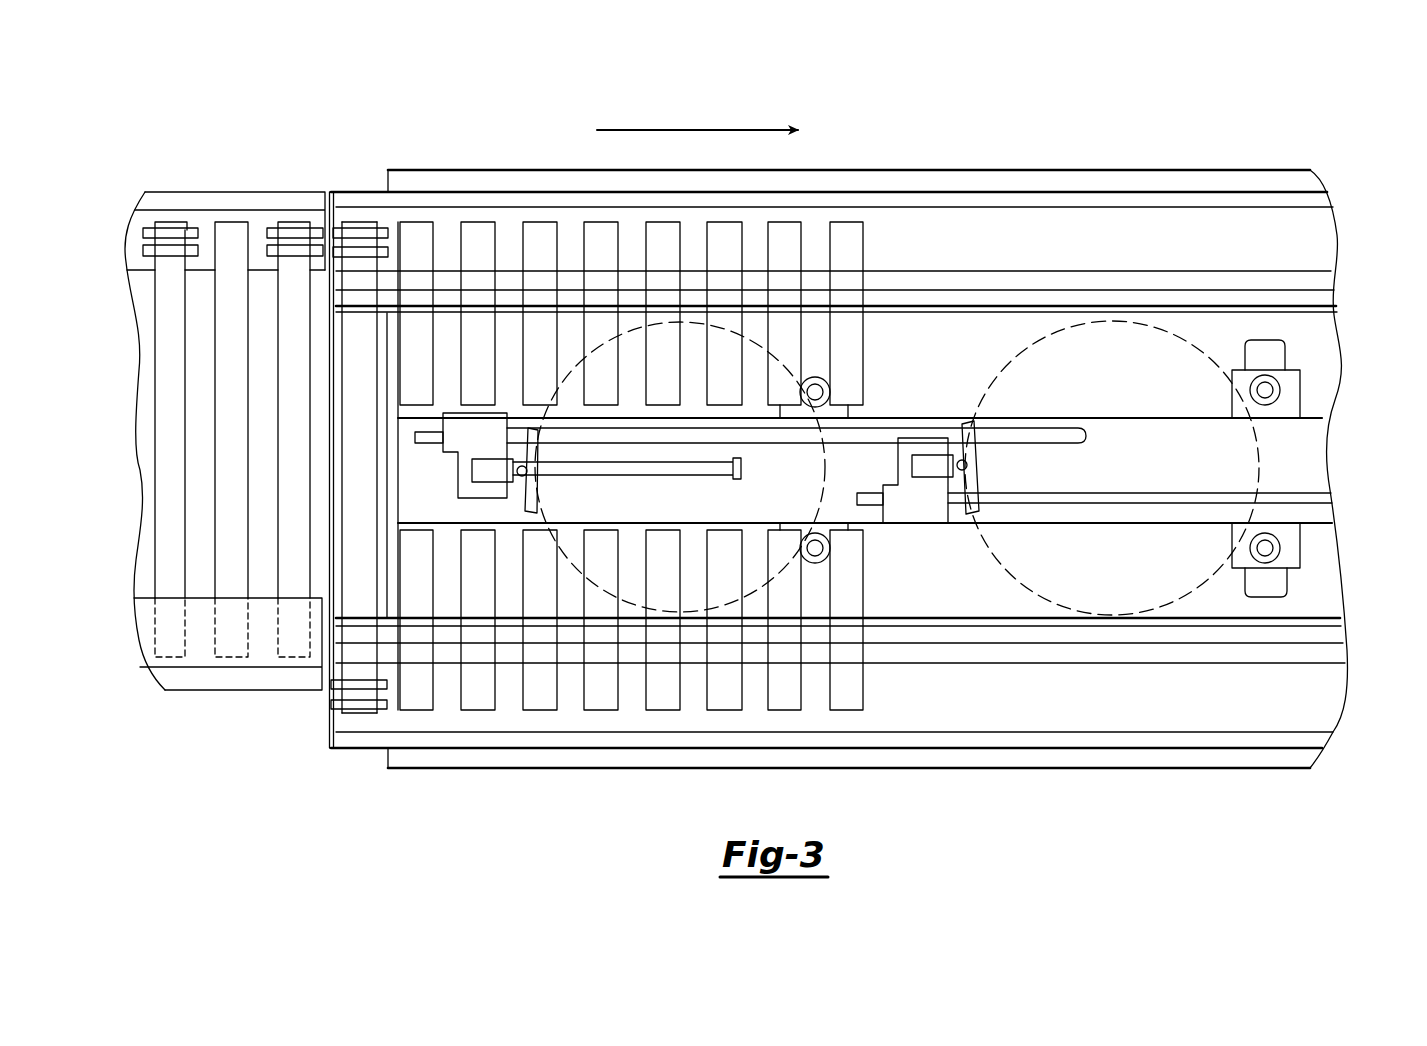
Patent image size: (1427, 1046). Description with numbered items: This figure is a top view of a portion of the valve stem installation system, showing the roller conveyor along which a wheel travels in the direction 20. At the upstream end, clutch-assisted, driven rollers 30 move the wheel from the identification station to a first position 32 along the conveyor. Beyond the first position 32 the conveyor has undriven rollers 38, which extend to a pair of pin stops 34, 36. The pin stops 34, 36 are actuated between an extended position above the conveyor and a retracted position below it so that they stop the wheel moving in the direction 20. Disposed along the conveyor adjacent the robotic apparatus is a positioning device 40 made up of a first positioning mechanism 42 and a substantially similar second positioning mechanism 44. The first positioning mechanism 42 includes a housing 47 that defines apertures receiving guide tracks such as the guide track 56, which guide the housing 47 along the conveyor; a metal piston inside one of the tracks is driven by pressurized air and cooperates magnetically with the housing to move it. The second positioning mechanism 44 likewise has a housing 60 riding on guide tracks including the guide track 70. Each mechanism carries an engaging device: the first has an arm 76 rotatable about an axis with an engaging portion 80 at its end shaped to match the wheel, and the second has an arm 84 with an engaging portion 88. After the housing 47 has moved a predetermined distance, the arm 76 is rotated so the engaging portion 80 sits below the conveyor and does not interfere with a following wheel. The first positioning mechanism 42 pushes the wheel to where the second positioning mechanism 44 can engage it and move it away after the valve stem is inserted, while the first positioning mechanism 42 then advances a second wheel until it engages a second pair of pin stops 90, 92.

The direction 20 is at (672, 130).
The driven rollers 30 is at (165, 553).
The first position 32 is at (365, 185).
The pin stop 34 is at (855, 392).
The pin stop 36 is at (853, 558).
The undriven rollers 38 is at (478, 682).
The positioning device 40 is at (932, 370).
The first positioning mechanism 42 is at (432, 423).
The second positioning mechanism 44 is at (944, 530).
The housing 47 is at (470, 437).
The guide track 56 is at (415, 437).
The housing 60 is at (908, 450).
The guide track 70 is at (1320, 500).
The arm 76 is at (487, 472).
The engaging portion 80 is at (527, 512).
The arm 84 is at (928, 470).
The engaging portion 88 is at (965, 487).
The pin stop 90 is at (1310, 372).
The pin stop 92 is at (1293, 583).